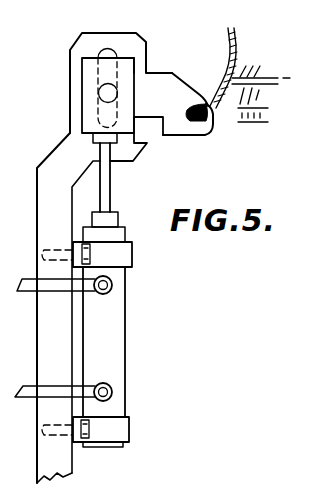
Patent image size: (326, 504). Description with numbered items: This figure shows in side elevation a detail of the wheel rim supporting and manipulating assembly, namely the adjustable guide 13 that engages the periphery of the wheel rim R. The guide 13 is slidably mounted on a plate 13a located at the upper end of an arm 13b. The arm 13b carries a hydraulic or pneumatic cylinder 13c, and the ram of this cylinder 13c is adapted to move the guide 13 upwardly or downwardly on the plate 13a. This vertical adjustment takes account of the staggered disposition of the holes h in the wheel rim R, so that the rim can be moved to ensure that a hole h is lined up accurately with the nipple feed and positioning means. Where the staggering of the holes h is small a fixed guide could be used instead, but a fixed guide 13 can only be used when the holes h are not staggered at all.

The guide 13 is at (183, 128).
The plate 13a is at (148, 52).
The arm 13b is at (57, 198).
The hydraulic or pneumatic cylinder 13c is at (105, 332).
The hole h is at (236, 48).
The wheel rim R is at (238, 100).